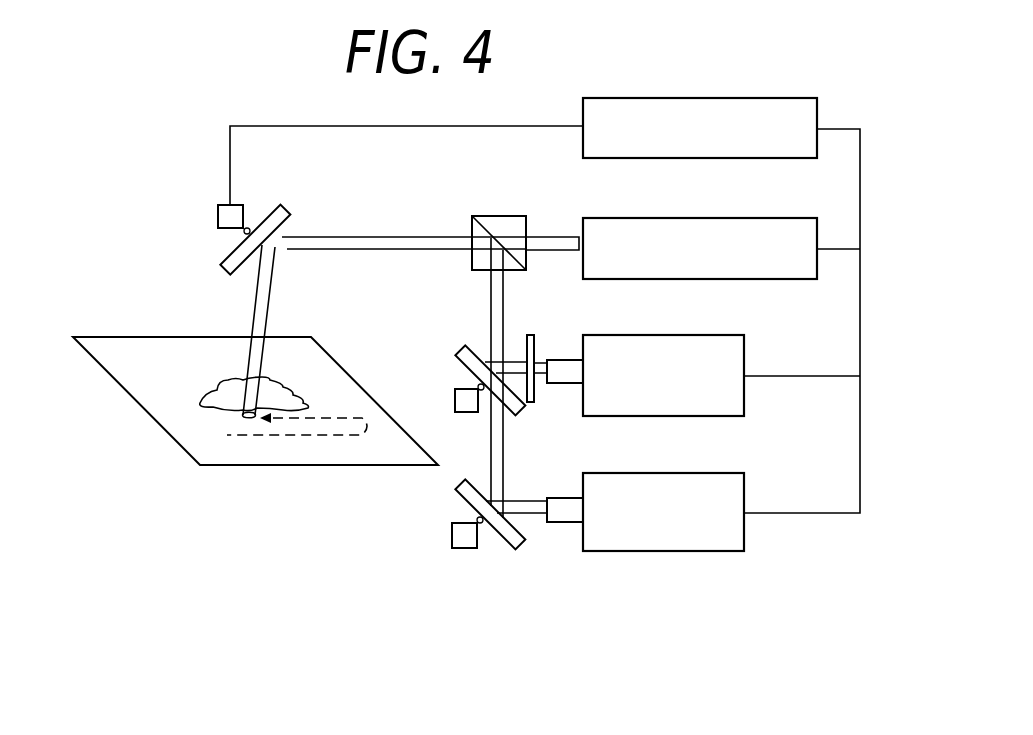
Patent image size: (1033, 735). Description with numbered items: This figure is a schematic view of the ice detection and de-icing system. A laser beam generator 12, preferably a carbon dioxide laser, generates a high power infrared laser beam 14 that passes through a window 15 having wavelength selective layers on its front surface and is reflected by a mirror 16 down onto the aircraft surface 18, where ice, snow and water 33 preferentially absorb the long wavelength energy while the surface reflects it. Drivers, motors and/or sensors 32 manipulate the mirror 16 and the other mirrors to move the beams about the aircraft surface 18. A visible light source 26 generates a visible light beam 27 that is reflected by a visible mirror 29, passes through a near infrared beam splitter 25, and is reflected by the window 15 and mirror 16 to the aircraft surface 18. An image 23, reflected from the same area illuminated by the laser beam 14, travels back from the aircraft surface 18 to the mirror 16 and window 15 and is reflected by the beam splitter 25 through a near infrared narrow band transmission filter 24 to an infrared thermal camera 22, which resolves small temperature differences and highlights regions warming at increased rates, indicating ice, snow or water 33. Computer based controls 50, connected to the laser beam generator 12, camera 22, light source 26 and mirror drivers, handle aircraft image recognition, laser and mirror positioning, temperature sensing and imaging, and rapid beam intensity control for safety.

The computer based controls 50 is at (806, 98).
The laser beam generator 12 is at (800, 280).
The laser beam 14 is at (566, 238).
The window 15 is at (511, 218).
The mirrors 16 is at (228, 258).
The drivers, motors and/or sensors 32 is at (222, 205).
The ice, snow and water 33 is at (275, 395).
The aircraft surface 18 is at (260, 447).
The near infrared beam splitter 25 is at (466, 350).
The near infrared narrow band transmission filter 24 is at (530, 335).
The image 23 is at (541, 374).
The infrared thermal camera 22 is at (744, 353).
The visible light source 26 is at (744, 491).
The visible light beam 27 is at (541, 500).
The visible mirror 29 is at (510, 546).